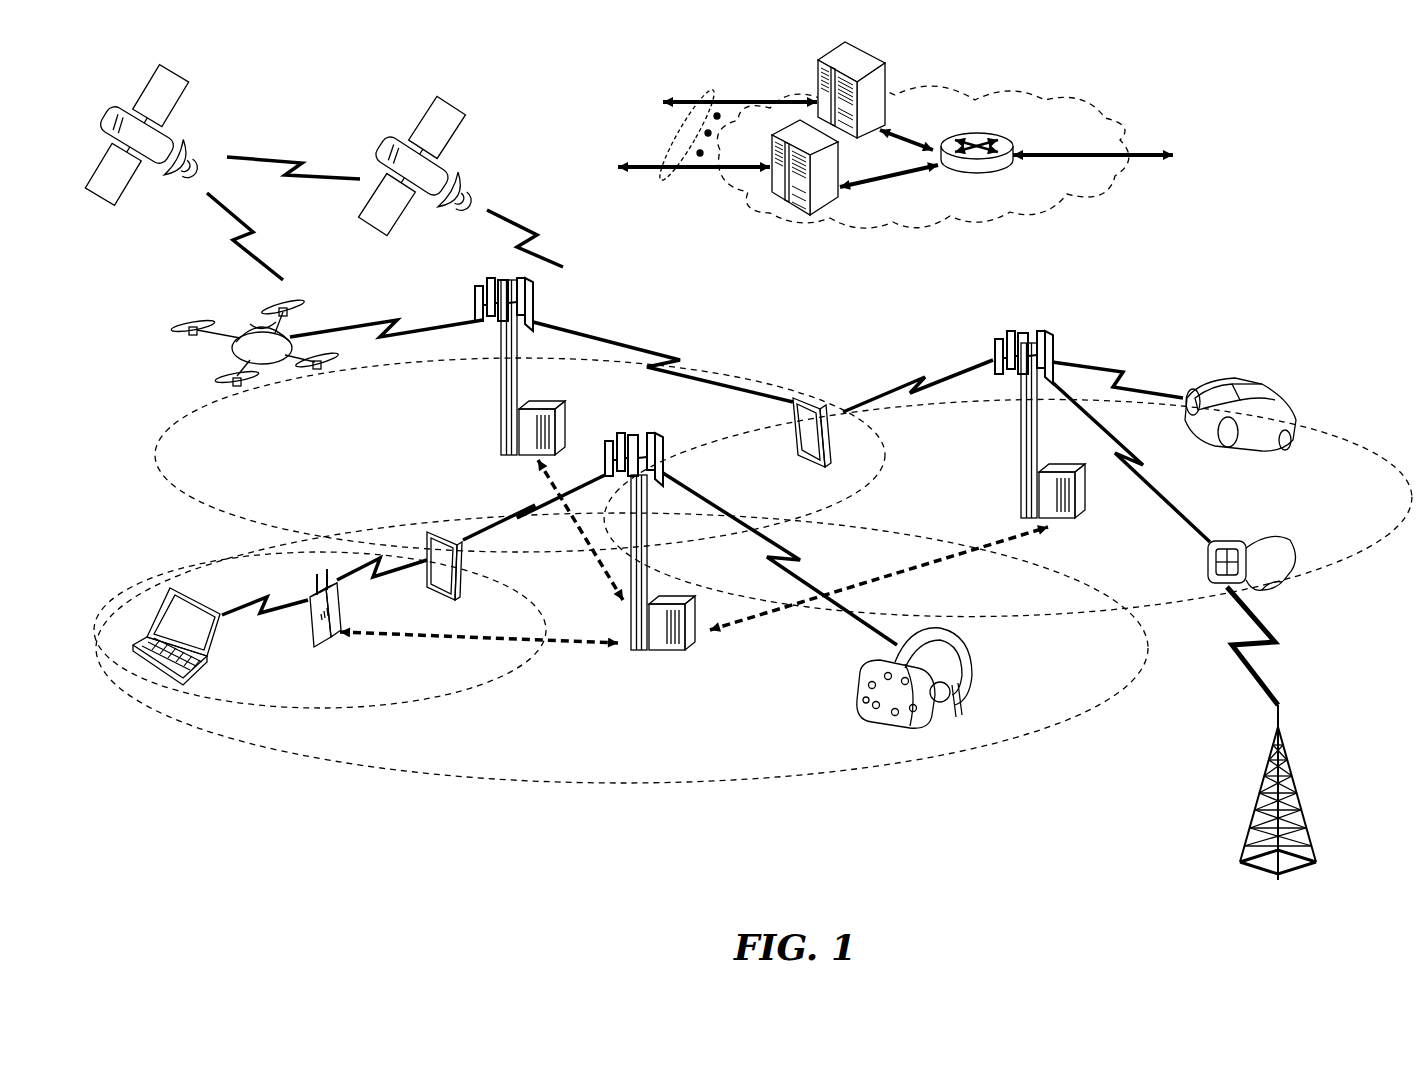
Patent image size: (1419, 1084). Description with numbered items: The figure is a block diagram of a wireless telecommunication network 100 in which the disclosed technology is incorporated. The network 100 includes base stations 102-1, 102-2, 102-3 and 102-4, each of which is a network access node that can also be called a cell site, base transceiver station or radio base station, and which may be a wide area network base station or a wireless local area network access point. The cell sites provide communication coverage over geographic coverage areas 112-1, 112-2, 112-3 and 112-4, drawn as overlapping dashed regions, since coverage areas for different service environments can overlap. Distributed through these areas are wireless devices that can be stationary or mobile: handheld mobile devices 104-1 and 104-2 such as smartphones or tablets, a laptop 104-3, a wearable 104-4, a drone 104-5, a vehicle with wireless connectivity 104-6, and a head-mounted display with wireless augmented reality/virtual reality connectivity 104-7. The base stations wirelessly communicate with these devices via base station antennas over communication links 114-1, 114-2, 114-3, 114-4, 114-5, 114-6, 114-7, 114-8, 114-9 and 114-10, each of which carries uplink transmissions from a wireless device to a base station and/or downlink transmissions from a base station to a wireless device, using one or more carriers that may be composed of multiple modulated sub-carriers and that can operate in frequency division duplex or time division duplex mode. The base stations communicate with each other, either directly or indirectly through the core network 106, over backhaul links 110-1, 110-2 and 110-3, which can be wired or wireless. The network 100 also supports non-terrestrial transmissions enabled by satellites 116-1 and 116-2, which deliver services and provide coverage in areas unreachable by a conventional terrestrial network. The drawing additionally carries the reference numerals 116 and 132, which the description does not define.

The wireless telecommunication network 100 is at (1312, 140).
The base station 102-1 is at (632, 662).
The base station 102-2 is at (498, 420).
The base station 102-3 is at (1020, 450).
The base station 102-4 is at (310, 645).
The handheld mobile device 104-1 is at (462, 552).
The handheld mobile device 104-2 is at (793, 440).
The laptop 104-3 is at (150, 680).
The wearable 104-4 is at (1230, 540).
The drone 104-5 is at (282, 372).
The vehicle with wireless connectivity 104-6 is at (1268, 388).
The head-mounted display 104-7 is at (975, 670).
The core network 106 is at (1025, 230).
The backhaul link 110-1 is at (378, 640).
The backhaul link 110-2 is at (945, 570).
The backhaul link 110-3 is at (608, 570).
The geographic coverage area 112-1 is at (562, 792).
The geographic coverage area 112-2 is at (445, 706).
The geographic coverage area 112-3 is at (217, 508).
The geographic coverage area 112-4 is at (1330, 448).
The communication link 114-1 is at (795, 565).
The communication link 114-2 is at (515, 510).
The communication link 114-3 is at (262, 615).
The communication link 114-4 is at (392, 585).
The communication link 114-5 is at (380, 323).
The communication link 114-6 is at (912, 382).
The communication link 114-7 is at (665, 358).
The communication link 114-8 is at (1153, 468).
The communication link 114-9 is at (1121, 372).
The communication link 114-10 is at (1262, 650).
The broadcast tower 116 is at (1300, 775).
The satellite 116-1 is at (192, 152).
The satellite 116-2 is at (468, 187).
The network gateway 132 is at (685, 185).